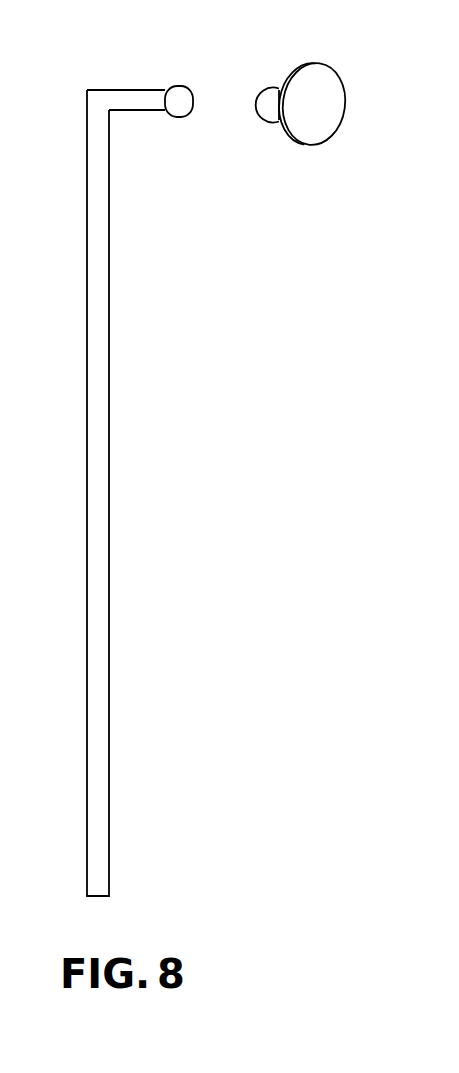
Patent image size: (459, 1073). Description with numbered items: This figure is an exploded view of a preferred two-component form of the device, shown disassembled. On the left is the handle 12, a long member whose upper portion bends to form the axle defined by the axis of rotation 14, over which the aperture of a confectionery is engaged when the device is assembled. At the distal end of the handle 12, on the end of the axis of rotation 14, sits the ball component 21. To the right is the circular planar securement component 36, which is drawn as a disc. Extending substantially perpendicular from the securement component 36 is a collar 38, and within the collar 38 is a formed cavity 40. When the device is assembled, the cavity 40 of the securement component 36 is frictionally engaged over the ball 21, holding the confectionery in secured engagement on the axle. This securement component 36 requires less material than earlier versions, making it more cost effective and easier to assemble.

The handle 12 is at (110, 507).
The axis of rotation 14 is at (120, 90).
The ball component 21 is at (163, 90).
The circular planar securement component 36 is at (318, 140).
The collar 38 is at (273, 88).
The formed cavity 40 is at (257, 110).